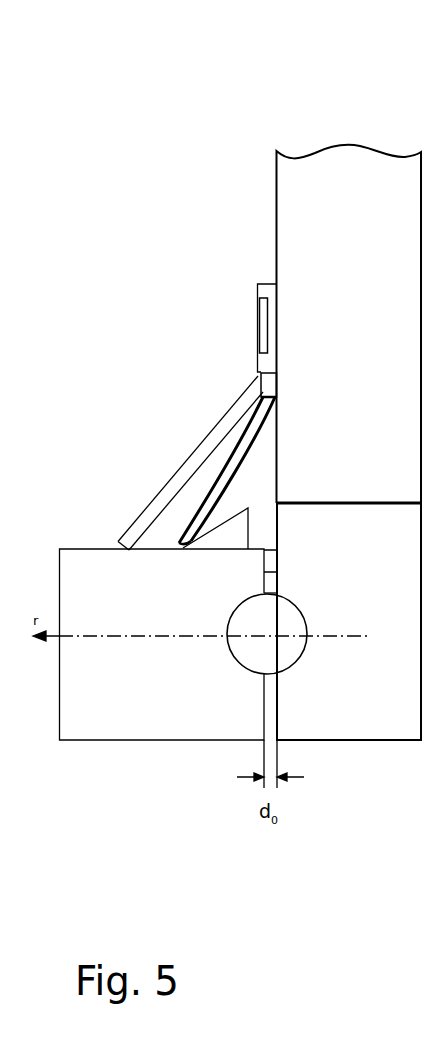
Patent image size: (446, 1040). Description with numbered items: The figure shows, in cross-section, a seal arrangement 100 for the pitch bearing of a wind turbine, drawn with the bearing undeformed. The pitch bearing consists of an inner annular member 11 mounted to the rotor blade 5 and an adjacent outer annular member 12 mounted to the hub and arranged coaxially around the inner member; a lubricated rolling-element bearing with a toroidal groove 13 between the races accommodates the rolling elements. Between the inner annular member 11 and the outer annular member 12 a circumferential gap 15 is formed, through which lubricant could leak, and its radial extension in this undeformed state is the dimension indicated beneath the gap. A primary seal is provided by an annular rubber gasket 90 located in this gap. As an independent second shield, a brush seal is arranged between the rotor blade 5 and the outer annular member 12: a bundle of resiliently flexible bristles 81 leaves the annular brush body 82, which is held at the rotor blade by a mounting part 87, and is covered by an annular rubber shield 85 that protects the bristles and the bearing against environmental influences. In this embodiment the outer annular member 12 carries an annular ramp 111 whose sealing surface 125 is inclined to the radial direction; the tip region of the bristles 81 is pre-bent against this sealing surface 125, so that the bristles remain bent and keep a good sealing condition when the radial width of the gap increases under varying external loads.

The seal arrangement 100 is at (270, 50).
The rotor blade 5 is at (283, 225).
The guide housing 87 is at (262, 323).
The annular brush body 82 is at (270, 383).
The bundle of resiliently flexible bristles 81 is at (225, 487).
The annular rubber shield 85 is at (138, 523).
The sealing surface 125 is at (226, 505).
The annular ramp 111 is at (227, 530).
The annular rubber gasket 90 is at (270, 562).
The circumferential gap 15 is at (270, 585).
The toroidal groove 13 is at (270, 649).
The outer annular member 12 is at (203, 703).
The inner annular member 11 is at (395, 713).